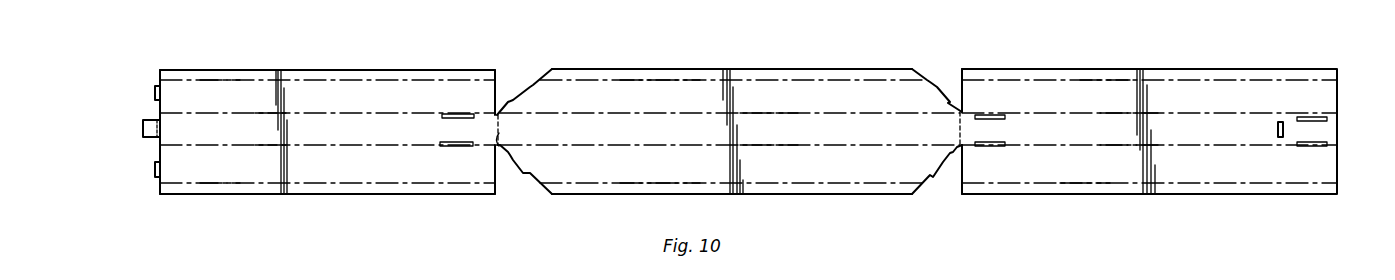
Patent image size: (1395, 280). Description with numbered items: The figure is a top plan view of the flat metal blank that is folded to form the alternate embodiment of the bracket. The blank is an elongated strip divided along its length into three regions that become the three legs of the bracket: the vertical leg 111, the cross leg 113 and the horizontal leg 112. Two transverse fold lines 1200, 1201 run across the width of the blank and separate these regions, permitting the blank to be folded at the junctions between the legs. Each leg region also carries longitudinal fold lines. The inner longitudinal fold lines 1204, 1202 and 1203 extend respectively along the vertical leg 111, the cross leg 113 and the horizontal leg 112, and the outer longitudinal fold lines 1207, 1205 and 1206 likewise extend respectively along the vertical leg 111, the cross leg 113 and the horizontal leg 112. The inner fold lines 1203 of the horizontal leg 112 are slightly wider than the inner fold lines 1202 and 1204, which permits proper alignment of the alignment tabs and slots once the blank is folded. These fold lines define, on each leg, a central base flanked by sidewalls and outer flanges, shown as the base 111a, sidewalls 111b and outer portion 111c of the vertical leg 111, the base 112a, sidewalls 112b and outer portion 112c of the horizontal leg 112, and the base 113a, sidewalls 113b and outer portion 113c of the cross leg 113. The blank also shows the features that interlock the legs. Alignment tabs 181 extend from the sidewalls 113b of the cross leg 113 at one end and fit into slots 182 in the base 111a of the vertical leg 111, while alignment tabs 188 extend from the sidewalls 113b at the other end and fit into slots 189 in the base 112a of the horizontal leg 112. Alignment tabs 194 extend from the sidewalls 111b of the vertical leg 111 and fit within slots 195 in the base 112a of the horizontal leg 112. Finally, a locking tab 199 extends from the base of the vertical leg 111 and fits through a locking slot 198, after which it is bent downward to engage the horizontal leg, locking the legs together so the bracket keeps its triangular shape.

The vertical leg 111 is at (328, 69).
The base of the vertical leg 111a is at (267, 135).
The sidewalls of the vertical leg 111b is at (248, 92).
The outer layer of first section 111c is at (215, 72).
The horizontal leg 112 is at (1148, 67).
The base of the horizontal leg 112a is at (1125, 137).
The intermediate layer of second section 112b is at (1100, 87).
The outer layer of second section 112c is at (1057, 70).
The cross leg 113 is at (730, 63).
The inner layer of third section 113a is at (758, 133).
The sidewalls of the cross leg 113b is at (657, 82).
The outer layer of third section 113c is at (623, 73).
The alignment tabs 181 is at (513, 87).
The slots 182 is at (453, 114).
The alignment tabs 188 is at (945, 80).
The slots 189 is at (990, 143).
The alignment tabs 194 is at (158, 92).
The slots 195 is at (1305, 143).
The locking slot 198 is at (1278, 127).
The locking tab 199 is at (143, 128).
The transverse fold line 1200 is at (493, 135).
The transverse fold line 1201 is at (968, 140).
The inner longitudinal fold lines 1202 is at (847, 143).
The inner longitudinal fold lines 1203 is at (1230, 148).
The inner longitudinal fold lines 1204 is at (388, 143).
The outer longitudinal fold lines 1205 is at (815, 78).
The outer longitudinal fold lines 1206 is at (1230, 77).
The outer longitudinal fold lines 1207 is at (378, 78).